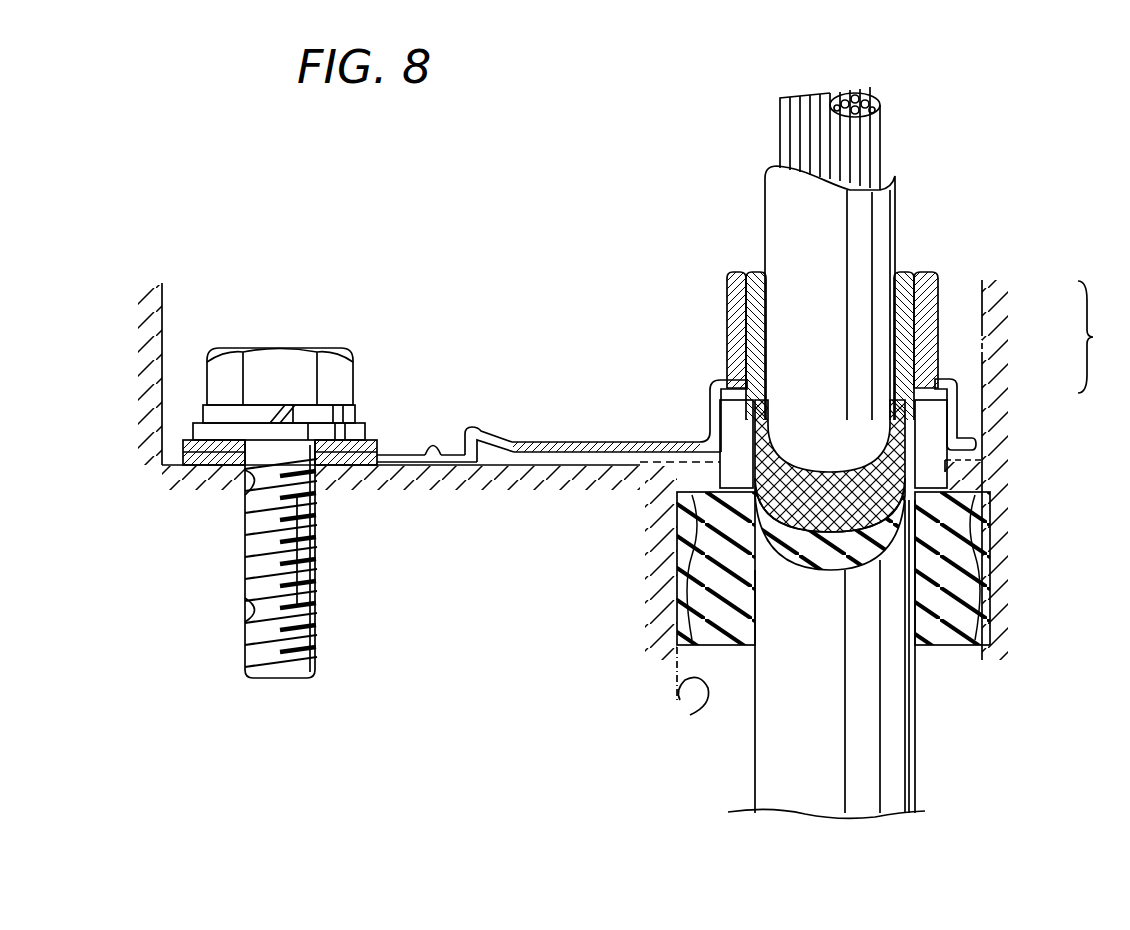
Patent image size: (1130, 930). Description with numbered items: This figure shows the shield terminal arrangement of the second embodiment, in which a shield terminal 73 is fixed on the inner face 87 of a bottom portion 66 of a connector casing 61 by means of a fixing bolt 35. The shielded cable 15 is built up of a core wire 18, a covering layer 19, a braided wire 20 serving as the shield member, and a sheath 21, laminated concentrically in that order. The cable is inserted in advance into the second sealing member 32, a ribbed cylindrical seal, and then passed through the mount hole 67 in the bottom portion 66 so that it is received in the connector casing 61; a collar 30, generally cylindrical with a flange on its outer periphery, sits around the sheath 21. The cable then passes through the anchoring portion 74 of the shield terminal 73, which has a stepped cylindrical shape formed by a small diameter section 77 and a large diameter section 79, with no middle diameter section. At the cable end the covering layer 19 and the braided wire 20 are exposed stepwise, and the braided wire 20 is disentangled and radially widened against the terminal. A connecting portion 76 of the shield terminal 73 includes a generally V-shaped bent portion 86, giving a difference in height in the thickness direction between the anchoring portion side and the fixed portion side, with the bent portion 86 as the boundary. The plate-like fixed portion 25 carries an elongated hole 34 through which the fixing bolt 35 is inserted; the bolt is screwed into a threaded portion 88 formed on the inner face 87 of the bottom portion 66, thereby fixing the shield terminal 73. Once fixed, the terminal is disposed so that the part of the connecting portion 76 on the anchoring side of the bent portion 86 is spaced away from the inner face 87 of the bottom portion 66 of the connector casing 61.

The shielded cable 15 is at (906, 790).
The core wire 18 is at (856, 138).
The covering layer 19 is at (862, 223).
The braided wire 20 is at (755, 272).
The sheath 21 is at (866, 750).
The fixed portion 25 is at (332, 470).
The collar 30 is at (728, 310).
The second sealing member 32 is at (933, 646).
The elongated hole 34 is at (246, 490).
The fixing bolt 35 is at (287, 370).
The connector casing 61 is at (553, 224).
The bottom portion 66 is at (528, 452).
The mount hole 67 is at (690, 715).
The shield terminal 73 is at (585, 442).
The anchoring portion 74 is at (1099, 337).
The connecting portion 76 is at (640, 442).
The small diameter section 77 is at (938, 326).
The large diameter section 79 is at (960, 412).
The bent portion 86 is at (486, 428).
The inner face 87 is at (434, 467).
The threaded portion 88 is at (245, 612).